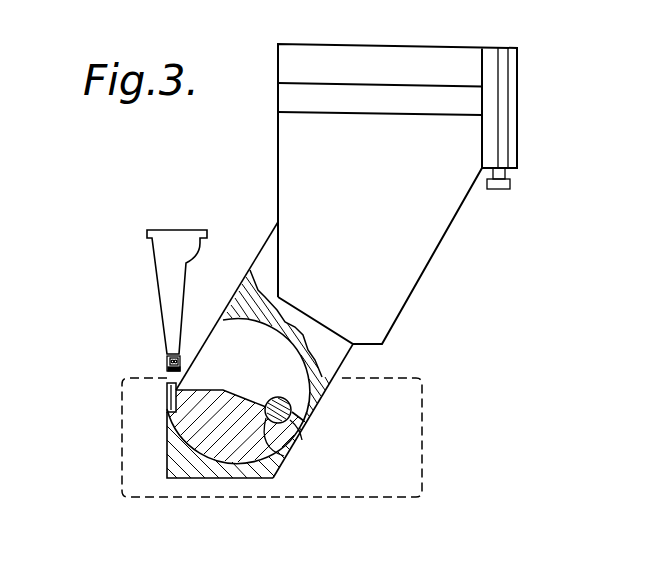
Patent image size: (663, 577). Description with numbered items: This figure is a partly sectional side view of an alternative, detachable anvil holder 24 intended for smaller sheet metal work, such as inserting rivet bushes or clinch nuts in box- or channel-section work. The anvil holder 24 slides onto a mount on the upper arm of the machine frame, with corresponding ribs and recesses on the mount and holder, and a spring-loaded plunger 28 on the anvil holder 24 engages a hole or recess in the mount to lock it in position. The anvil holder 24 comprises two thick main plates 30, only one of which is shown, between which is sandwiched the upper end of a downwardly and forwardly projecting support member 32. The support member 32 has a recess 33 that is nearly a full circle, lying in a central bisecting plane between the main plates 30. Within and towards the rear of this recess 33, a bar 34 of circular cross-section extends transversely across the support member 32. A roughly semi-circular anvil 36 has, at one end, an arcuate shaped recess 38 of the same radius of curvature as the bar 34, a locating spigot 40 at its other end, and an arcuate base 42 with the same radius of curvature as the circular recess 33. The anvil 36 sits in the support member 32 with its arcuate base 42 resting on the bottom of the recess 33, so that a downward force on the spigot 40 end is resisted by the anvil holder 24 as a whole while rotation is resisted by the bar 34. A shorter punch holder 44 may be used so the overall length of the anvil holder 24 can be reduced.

The detachable anvil holder 24 is at (397, 344).
The spring-loaded plunger 28 is at (510, 177).
The main plates 30 is at (430, 228).
The support member 32 is at (333, 354).
The recess 33 is at (250, 348).
The bar 34 is at (292, 413).
The anvil 36 is at (198, 429).
The arcuate shaped recess 38 is at (277, 455).
The locating spigot 40 is at (171, 384).
The arcuate base 42 is at (203, 452).
The punch holder 44 is at (160, 260).